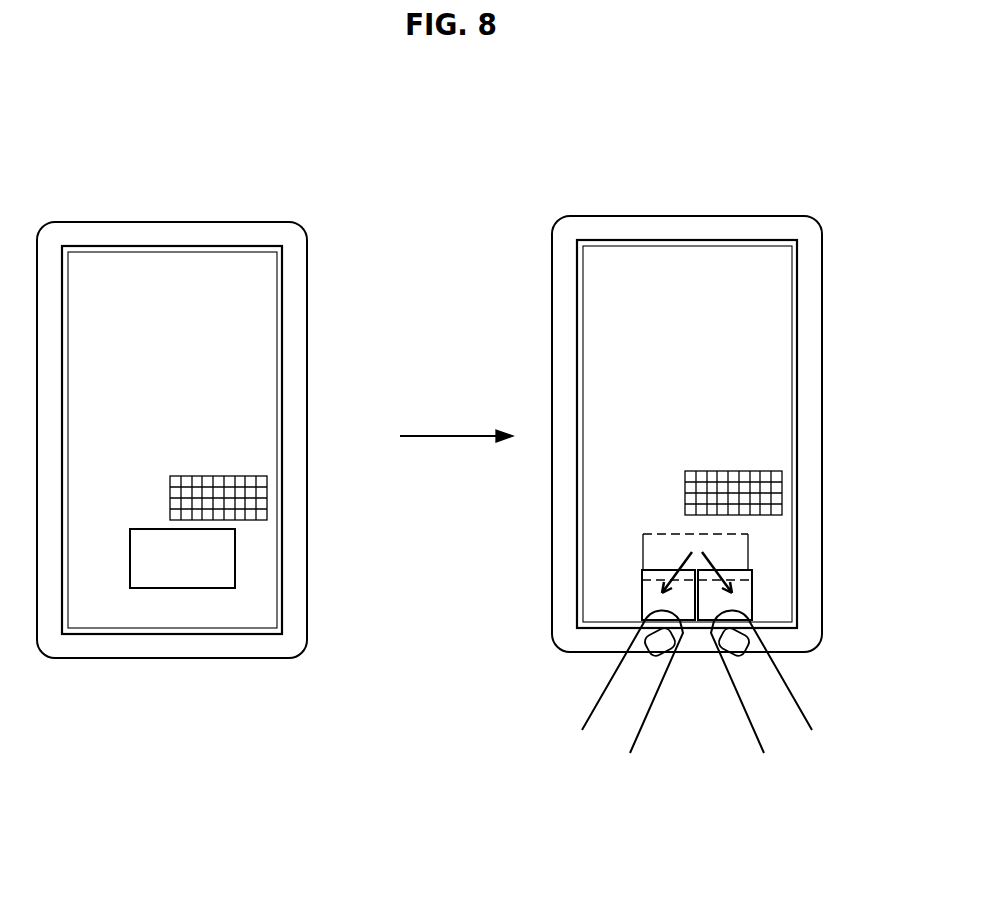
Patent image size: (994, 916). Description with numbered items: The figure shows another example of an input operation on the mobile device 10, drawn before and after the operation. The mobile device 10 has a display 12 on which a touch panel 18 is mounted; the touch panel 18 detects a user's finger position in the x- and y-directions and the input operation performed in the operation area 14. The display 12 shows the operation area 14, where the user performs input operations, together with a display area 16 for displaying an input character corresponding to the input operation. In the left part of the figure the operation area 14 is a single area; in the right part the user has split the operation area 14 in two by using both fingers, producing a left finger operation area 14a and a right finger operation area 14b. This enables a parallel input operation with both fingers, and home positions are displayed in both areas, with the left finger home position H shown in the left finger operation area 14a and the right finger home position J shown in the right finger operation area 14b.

The mobile device 10 is at (189, 189).
The display 12 is at (271, 318).
The operation area 14 is at (256, 531).
The left finger operation area 14a is at (641, 602).
The right finger operation area 14b is at (753, 602).
The display area 16 is at (240, 476).
The touch panel 18 is at (285, 388).